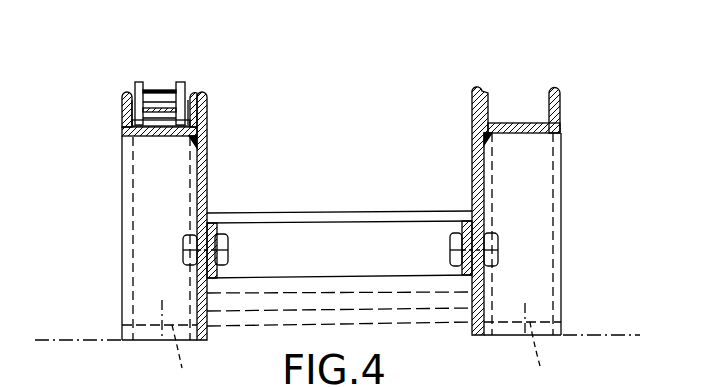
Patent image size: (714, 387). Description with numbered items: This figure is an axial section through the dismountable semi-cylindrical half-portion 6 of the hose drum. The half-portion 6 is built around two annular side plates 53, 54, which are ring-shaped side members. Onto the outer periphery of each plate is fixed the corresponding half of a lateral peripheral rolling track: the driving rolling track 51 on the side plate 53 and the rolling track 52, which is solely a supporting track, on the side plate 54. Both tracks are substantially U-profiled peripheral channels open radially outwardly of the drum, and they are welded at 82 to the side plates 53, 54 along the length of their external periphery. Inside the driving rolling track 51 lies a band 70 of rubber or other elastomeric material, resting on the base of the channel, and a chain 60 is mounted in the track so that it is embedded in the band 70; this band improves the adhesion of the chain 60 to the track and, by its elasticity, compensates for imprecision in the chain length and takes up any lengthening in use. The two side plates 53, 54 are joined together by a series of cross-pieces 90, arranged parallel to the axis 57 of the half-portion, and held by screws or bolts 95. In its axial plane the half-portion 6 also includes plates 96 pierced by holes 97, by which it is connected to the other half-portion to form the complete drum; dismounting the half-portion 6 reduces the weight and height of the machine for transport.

The semi-cylindrical drum half-portion 6 is at (217, 100).
The driving rolling track 51 is at (128, 109).
The supporting rolling track 52 is at (561, 107).
The annular side plate 53 is at (208, 176).
The annular side plate 54 is at (470, 168).
The axis 57 is at (93, 330).
The chain 60 is at (159, 80).
The band of rubber or elastomeric material 70 is at (142, 137).
The weld 82 is at (196, 139).
The cross-piece 90 is at (358, 240).
The screws or bolts 95 is at (238, 244).
The plate pierced by holes 96 is at (143, 333).
The mounting hole 97 is at (372, 350).